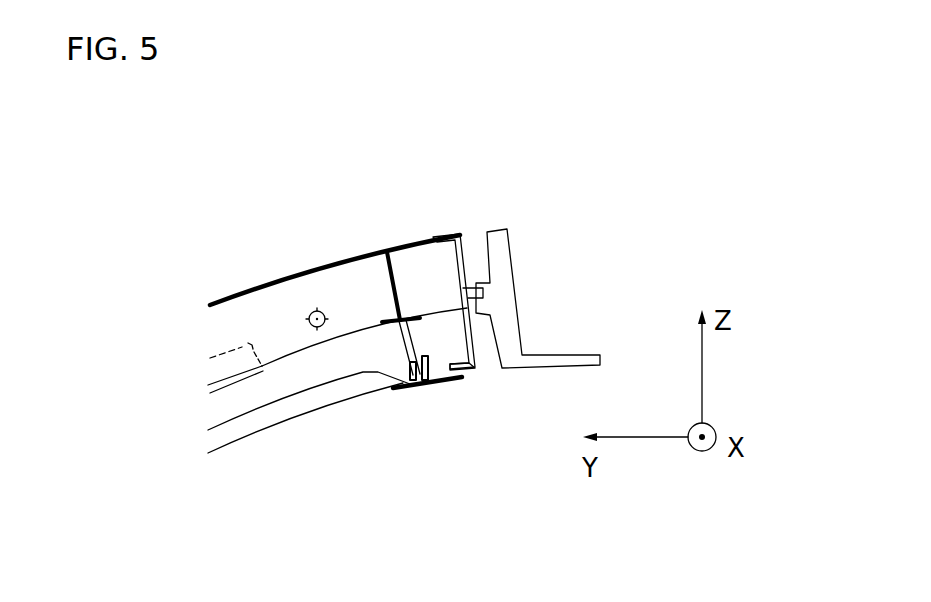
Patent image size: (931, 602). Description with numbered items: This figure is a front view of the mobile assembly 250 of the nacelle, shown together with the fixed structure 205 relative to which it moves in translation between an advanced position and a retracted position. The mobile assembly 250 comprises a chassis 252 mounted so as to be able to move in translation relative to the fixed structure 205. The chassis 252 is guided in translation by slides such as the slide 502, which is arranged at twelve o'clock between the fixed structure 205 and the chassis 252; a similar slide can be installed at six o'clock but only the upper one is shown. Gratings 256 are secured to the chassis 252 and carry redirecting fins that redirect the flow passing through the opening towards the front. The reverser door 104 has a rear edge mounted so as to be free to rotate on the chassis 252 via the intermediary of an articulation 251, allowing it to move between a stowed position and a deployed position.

The mobile assembly 250 is at (240, 199).
The gratings 256 is at (225, 367).
The reverser door 104 is at (300, 405).
The articulation 251 is at (430, 380).
The chassis 252 is at (478, 373).
The slide 502 is at (478, 290).
The fixed structure 205 is at (507, 297).